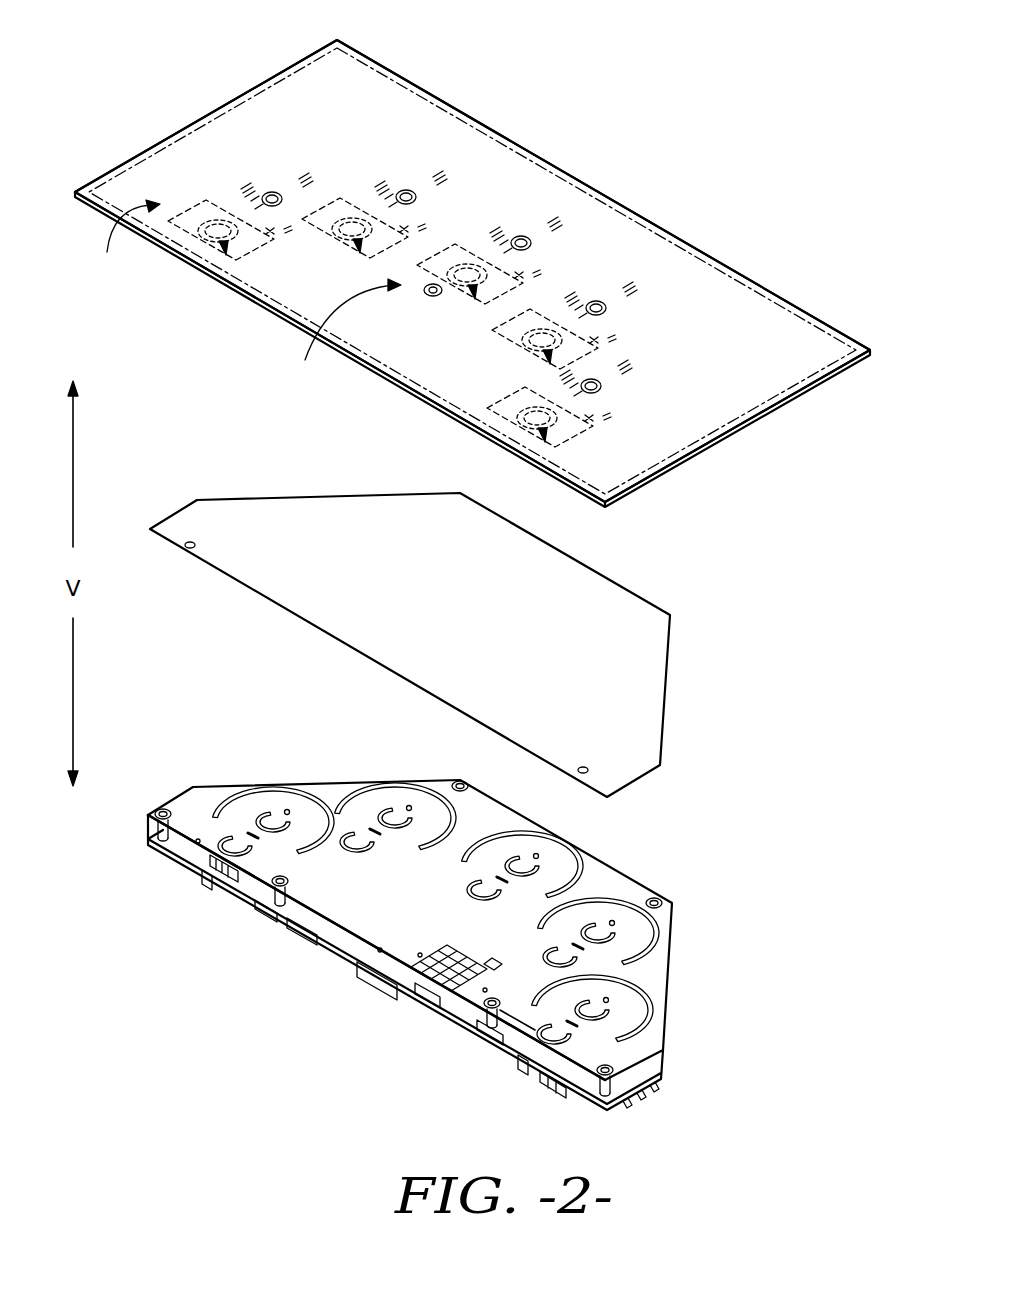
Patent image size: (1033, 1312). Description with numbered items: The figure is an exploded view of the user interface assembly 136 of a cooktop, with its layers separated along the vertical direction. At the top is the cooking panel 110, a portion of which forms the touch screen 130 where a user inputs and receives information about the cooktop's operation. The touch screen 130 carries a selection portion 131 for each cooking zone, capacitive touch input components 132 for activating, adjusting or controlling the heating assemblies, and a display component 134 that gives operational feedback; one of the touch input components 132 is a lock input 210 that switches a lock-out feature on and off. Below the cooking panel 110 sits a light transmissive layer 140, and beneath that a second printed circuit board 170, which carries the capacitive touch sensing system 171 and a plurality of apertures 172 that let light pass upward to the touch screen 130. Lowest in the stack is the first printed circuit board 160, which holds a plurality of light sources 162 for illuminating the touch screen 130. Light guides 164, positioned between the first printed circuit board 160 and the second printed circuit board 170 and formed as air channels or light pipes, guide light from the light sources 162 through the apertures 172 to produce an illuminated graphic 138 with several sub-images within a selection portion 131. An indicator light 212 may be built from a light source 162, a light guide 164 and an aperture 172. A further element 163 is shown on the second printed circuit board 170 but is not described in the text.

The cooking panel 110 is at (326, 80).
The touch screen 130 is at (119, 244).
The selection portion 131 is at (215, 238).
The capacitive touch input component 132 is at (258, 173).
The display component 134 is at (339, 336).
The user interface assembly 136 is at (178, 73).
The illuminated graphic 138 is at (165, 232).
The light transmissive layer 140 is at (613, 610).
The first printed circuit board 160 is at (193, 853).
The light source 162 is at (210, 880).
The mounting bracket 163 is at (430, 1003).
The light guide 164 is at (237, 875).
The second printed circuit board 170 is at (612, 878).
The capacitive touch sensing system 171 is at (517, 1015).
The aperture 172 is at (260, 815).
The lock input 210 is at (427, 296).
The indicator light 212 is at (440, 913).